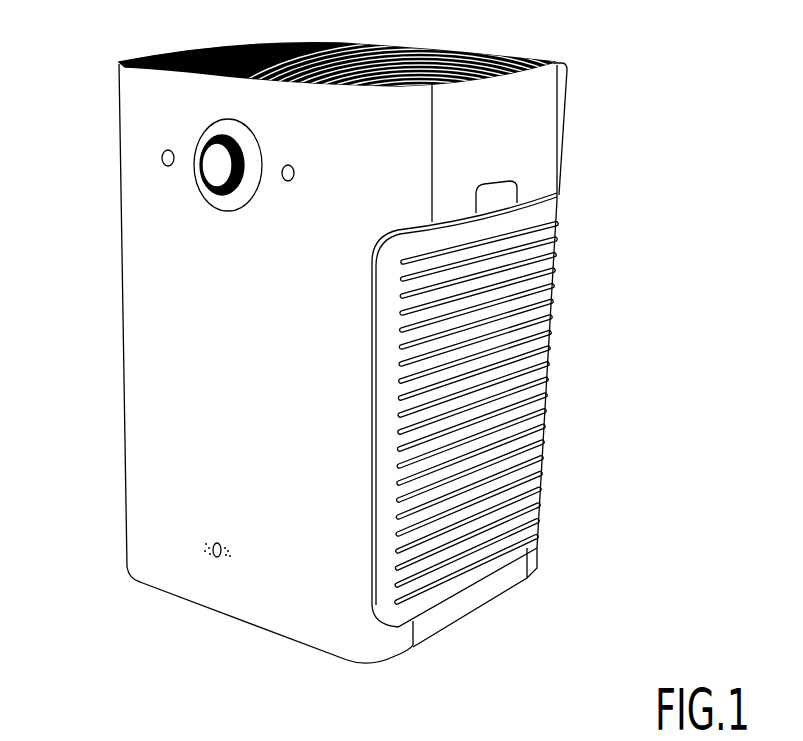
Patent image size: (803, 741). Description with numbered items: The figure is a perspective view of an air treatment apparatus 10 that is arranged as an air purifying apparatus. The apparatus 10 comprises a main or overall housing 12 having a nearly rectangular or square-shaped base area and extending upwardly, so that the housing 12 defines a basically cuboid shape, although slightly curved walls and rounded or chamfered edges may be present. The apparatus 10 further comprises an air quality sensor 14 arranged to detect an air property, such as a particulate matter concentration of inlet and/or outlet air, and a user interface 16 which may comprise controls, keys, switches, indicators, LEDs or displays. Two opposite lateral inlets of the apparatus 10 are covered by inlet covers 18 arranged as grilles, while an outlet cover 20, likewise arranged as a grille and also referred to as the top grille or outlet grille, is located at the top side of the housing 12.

The air treatment apparatus 10 is at (68, 336).
The main housing 12 is at (149, 436).
The air quality sensor 14 is at (565, 98).
The user interface 16 is at (213, 172).
The inlet cover 18 is at (512, 367).
The outlet cover 20 is at (398, 55).